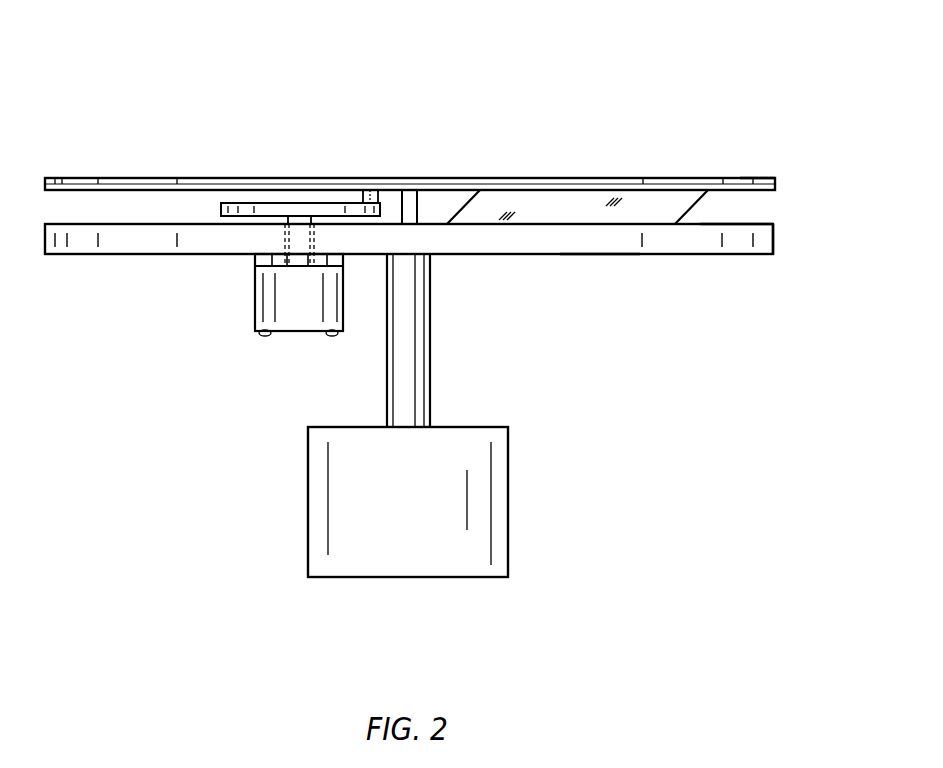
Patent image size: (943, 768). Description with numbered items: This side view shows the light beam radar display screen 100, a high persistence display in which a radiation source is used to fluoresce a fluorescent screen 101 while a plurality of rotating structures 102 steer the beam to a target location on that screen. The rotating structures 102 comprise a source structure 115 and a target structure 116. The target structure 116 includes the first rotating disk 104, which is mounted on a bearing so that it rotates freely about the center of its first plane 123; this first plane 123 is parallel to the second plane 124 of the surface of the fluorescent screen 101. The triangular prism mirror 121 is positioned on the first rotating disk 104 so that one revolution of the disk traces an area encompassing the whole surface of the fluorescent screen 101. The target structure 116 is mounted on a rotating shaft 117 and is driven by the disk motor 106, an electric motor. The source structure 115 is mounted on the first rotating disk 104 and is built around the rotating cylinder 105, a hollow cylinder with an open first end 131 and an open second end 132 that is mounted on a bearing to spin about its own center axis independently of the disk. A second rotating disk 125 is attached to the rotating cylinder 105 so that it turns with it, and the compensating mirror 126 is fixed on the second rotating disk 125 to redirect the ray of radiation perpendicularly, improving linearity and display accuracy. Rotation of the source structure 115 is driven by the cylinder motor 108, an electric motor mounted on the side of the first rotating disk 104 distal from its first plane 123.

The light beam radar display screen 100 is at (88, 32).
The fluorescent screen 101 is at (762, 185).
The rotating structures 102 is at (774, 248).
The first rotating disk 104 is at (680, 244).
The rotating cylinder 105 is at (298, 236).
The disk motor 106 is at (497, 515).
The cylinder motor 108 is at (295, 320).
The source structure 115 is at (282, 315).
The target structure 116 is at (592, 257).
The rotating shaft 117 is at (424, 351).
The triangular prism mirror 121 is at (645, 210).
The first plane 123 is at (753, 223).
The second plane 124 is at (82, 191).
The second rotating disk 125 is at (243, 210).
The compensating mirror 126 is at (371, 193).
The first end 131 is at (312, 265).
The second end 132 is at (297, 218).